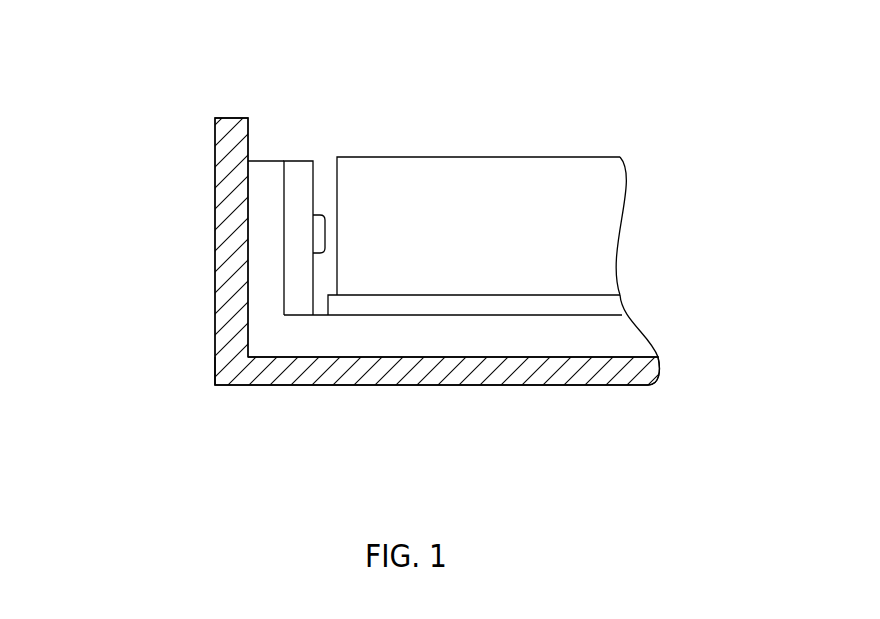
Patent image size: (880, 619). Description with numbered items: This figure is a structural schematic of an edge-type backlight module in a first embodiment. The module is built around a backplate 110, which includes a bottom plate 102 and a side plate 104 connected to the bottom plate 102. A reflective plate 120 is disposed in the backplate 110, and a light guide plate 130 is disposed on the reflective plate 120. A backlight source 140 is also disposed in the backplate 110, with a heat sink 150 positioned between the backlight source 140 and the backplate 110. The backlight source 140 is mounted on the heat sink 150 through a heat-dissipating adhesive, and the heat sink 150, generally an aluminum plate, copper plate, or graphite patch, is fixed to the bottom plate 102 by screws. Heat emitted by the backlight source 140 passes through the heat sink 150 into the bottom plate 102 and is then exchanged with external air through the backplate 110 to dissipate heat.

The backplate 110 is at (660, 368).
The bottom plate 102 is at (363, 375).
The side plate 104 is at (220, 280).
The heat sink 150 is at (260, 242).
The backlight source 140 is at (297, 187).
The reflective plate 120 is at (590, 307).
The light guide plate 130 is at (584, 228).